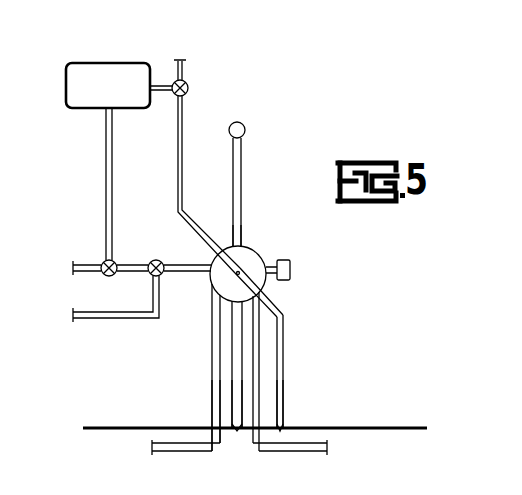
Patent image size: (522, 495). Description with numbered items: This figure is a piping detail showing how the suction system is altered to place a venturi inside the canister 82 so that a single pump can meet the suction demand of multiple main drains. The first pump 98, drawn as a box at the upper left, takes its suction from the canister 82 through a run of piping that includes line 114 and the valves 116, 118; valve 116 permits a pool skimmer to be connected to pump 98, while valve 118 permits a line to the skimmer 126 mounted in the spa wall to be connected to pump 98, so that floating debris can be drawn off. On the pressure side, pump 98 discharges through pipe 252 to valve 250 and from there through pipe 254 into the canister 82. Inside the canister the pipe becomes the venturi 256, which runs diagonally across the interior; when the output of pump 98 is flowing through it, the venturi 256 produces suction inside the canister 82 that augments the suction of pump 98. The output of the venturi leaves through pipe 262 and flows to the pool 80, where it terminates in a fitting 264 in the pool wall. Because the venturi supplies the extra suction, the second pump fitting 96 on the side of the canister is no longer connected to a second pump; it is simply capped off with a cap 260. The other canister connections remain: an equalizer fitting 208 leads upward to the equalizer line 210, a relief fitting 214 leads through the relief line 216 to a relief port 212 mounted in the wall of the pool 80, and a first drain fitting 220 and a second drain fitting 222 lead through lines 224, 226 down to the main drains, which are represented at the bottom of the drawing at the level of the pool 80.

The first pump 98 is at (106, 62).
The pipe 252 is at (165, 86).
The valve 250 is at (187, 92).
The line 114 is at (106, 165).
The valve 118 is at (103, 262).
The valve 116 is at (153, 261).
The skimmer 126 is at (116, 320).
The pipe 254 is at (183, 184).
The venturi 256 is at (226, 244).
The equalizer line 210 is at (243, 162).
The equalizer fitting 208 is at (243, 240).
The canister 82 is at (262, 255).
The second pump fitting 96 is at (270, 279).
The cap 260 is at (293, 270).
The first drain fitting 220 is at (215, 304).
The relief fitting 214 is at (222, 316).
The line 224 is at (212, 387).
The relief line 216 is at (232, 404).
The second drain fitting 222 is at (280, 326).
The line 226 is at (262, 363).
The pipe 262 is at (284, 408).
The relief port 212 is at (237, 432).
The fitting 264 is at (281, 432).
The pool 80 is at (187, 487).